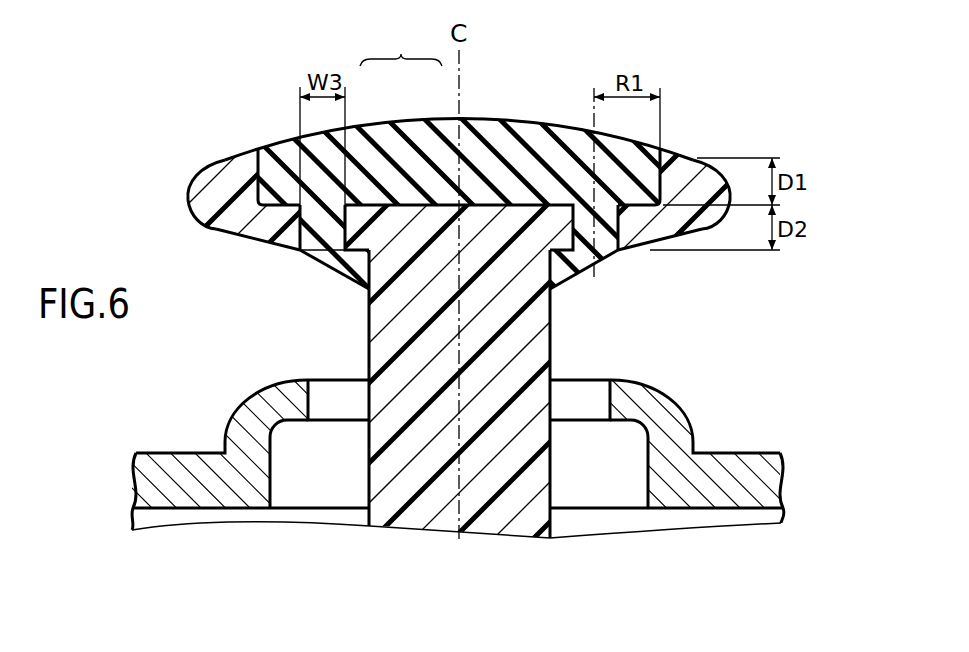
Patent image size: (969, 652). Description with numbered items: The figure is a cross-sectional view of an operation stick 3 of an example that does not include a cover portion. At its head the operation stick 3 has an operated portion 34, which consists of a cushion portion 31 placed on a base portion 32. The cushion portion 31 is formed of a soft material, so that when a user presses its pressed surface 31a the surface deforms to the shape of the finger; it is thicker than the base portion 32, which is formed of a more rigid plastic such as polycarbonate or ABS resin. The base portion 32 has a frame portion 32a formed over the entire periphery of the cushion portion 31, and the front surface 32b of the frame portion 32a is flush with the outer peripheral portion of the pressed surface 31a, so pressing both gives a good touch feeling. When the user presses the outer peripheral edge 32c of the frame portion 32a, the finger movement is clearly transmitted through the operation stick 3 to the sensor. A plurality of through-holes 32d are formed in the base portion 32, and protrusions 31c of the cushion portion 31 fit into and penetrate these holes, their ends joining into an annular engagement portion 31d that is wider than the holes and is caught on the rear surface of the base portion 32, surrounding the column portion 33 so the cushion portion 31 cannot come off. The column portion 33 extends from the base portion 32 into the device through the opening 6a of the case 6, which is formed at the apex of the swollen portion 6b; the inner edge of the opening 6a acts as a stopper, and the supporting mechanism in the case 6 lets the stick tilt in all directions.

The operation stick 3 is at (484, 294).
The case 6 is at (432, 436).
The opening 6a is at (610, 388).
The swollen portion 6b is at (658, 415).
The cushion portion 31 is at (484, 312).
The pressed surface 31a is at (550, 124).
The protrusion 31c is at (305, 240).
The engagement portion 31d is at (320, 262).
The base portion 32 is at (487, 205).
The frame portion 32a is at (243, 175).
The front surface 32b is at (211, 161).
The outer peripheral edge 32c is at (188, 200).
The through-hole 32d is at (340, 247).
The column portion 33 is at (545, 318).
The operated portion 34 is at (401, 47).